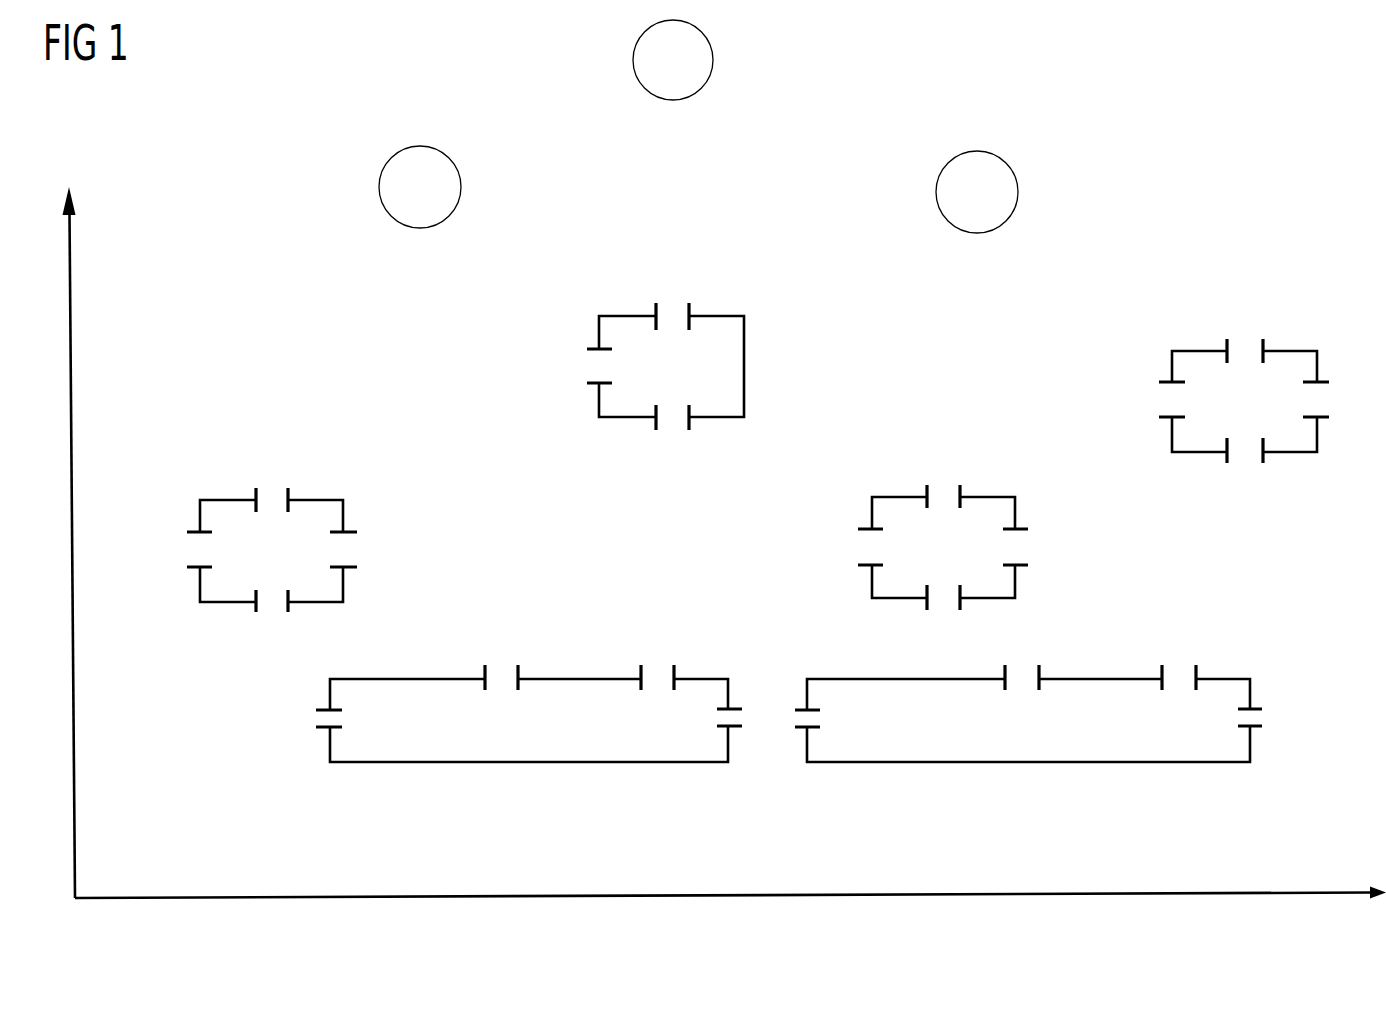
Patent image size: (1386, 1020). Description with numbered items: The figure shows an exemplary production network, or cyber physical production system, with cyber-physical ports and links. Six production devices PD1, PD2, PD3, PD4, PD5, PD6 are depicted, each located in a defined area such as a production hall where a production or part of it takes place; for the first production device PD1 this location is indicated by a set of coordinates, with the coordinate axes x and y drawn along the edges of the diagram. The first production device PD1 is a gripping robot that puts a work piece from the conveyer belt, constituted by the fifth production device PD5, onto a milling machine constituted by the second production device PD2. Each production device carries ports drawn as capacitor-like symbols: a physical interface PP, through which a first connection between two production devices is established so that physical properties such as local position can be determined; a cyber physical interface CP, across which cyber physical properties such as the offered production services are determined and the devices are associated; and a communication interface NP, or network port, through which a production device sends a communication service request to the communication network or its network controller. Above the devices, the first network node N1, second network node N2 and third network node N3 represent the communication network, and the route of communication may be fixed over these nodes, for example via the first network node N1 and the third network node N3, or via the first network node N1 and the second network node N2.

The first network node N1 is at (420, 187).
The second network node N2 is at (673, 60).
The third network node N3 is at (977, 192).
The first production device PD1 is at (271, 551).
The second production device PD2 is at (671, 366).
The third production device PD3 is at (943, 547).
The fourth production device PD4 is at (1244, 401).
The fifth production device PD5 is at (529, 720).
The sixth production device PD6 is at (1028, 720).
The communication interface NP is at (809, 481).
The physical interface PP is at (713, 547).
The cyber physical interface CP is at (777, 544).
The coordinate x is at (58, 541).
The coordinate y is at (730, 909).